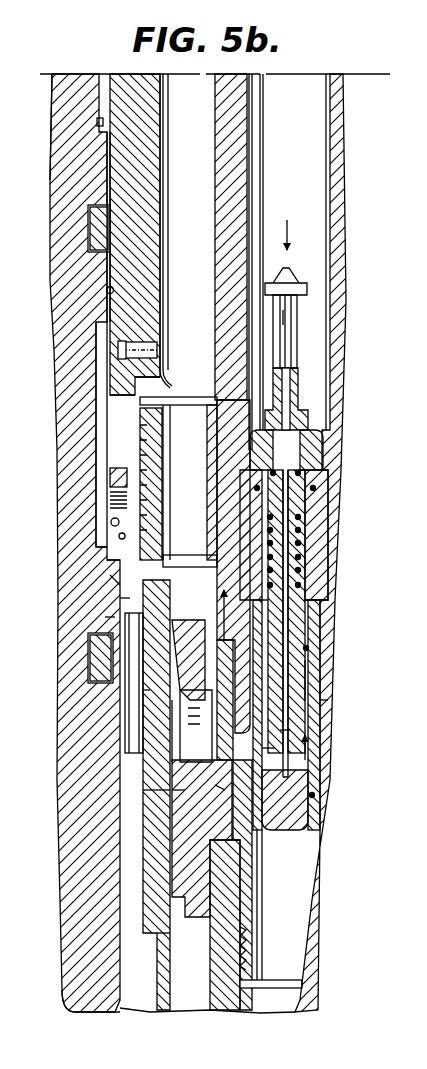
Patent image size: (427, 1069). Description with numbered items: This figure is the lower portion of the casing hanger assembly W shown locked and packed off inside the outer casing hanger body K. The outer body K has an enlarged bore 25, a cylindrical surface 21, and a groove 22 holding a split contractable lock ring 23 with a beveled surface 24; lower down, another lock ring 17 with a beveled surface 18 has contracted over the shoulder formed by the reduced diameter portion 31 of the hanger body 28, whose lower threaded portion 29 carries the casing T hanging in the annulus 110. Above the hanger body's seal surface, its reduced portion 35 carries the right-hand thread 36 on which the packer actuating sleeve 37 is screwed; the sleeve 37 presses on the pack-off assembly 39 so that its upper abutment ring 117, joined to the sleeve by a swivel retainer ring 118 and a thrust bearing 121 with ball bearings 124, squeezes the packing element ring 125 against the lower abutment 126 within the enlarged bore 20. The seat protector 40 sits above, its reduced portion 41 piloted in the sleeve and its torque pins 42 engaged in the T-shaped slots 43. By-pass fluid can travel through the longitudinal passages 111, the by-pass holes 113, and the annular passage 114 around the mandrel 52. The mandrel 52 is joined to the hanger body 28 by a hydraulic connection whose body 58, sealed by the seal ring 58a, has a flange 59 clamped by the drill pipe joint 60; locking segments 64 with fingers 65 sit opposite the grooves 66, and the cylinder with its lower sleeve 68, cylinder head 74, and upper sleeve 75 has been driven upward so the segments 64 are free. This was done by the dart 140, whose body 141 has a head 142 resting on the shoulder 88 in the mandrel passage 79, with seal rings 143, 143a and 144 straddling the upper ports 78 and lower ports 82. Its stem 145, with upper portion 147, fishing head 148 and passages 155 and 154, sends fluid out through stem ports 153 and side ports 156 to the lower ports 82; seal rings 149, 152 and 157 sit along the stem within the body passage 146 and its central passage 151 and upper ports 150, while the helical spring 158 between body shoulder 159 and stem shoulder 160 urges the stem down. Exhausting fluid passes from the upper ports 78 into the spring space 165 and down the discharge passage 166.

The outer casing hanger body K is at (55, 93).
The enlarged bore 25 is at (100, 121).
The seat protector 40 is at (118, 148).
The annular passage 114 is at (179, 145).
The central mandrel passage 79 is at (297, 193).
The upper inner beveled surface 24 is at (105, 212).
The mandrel 52 is at (240, 192).
The internal circumferential groove 22 is at (90, 213).
The split inherently contractable lock ring 23 is at (90, 238).
The internal cylindrical surface 21 is at (106, 290).
The upper fishing head 148 is at (300, 272).
The reduced diameter portion 41 is at (148, 330).
The central passage 155 is at (290, 318).
The inverted T-shaped slots 43 is at (122, 346).
The radial torque pins 42 is at (157, 350).
The upper stem portion 147 is at (296, 350).
The enlarged internal bore 20 is at (100, 400).
The fluid by-pass holes 113 is at (120, 435).
The upper cylinder sleeve 75 is at (213, 440).
The upper head 142 is at (320, 448).
The reduced external diameter portion 35 is at (163, 462).
The upwardly facing shoulder 88 is at (322, 466).
The packer actuating sleeve 37 is at (118, 483).
The right-hand thread 36 is at (148, 490).
The upper seal ring 149 is at (300, 478).
The ball bearings 124 is at (125, 510).
The upper side seal ring 143 is at (322, 492).
The body shoulder 159 is at (306, 507).
The thrust bearing 121 is at (111, 522).
The upper ports 78 is at (230, 535).
The central passage 151 is at (300, 520).
The upper ports 150 is at (306, 533).
The split snap retainer ring 118 is at (119, 536).
The cylinder head 74 is at (210, 545).
The helical spring 158 is at (306, 557).
The upper abutment ring 117 is at (110, 575).
The dart 140 is at (308, 590).
The pack-off assembly 39 is at (92, 585).
The packing element ring 125 is at (115, 580).
The annular spring space 165 is at (306, 595).
The lower cylinder sleeve 68 is at (125, 600).
The stem shoulder 160 is at (320, 610).
The lower abutment 126 is at (110, 617).
The plug body 141 is at (322, 628).
The upper inner beveled surface 18 is at (100, 640).
The central passage 146 is at (308, 648).
The split inherently contractable lock ring 17 is at (95, 652).
The reduced external diameter portion 31 is at (140, 666).
The stem 145 is at (305, 675).
The casing hanger assembly W is at (143, 690).
The intermediate seal ring 152 is at (305, 700).
The outer tapered fingers 65 is at (178, 716).
The intermediate seal ring 143a is at (322, 710).
The circumferential internal grooves 66 is at (172, 735).
The central passage 154 is at (288, 730).
The longitudinal fluid passages 111 is at (143, 740).
The lower ports 153 is at (276, 748).
The locking segments 64 is at (140, 770).
The side ports 156 is at (262, 765).
The hanger body 28 is at (140, 782).
The lower seal ring 144 is at (314, 795).
The seal ring 58a is at (175, 797).
The lower ports 82 is at (218, 790).
The lower seal ring 157 is at (310, 815).
The body 58 is at (185, 850).
The discharge passage 166 is at (270, 830).
The inwardly directed flange 59 is at (238, 835).
The lower threaded portion 29 is at (157, 900).
The annulus 110 is at (118, 965).
The casing T is at (150, 1010).
The drill pipe joint 60 is at (245, 1006).